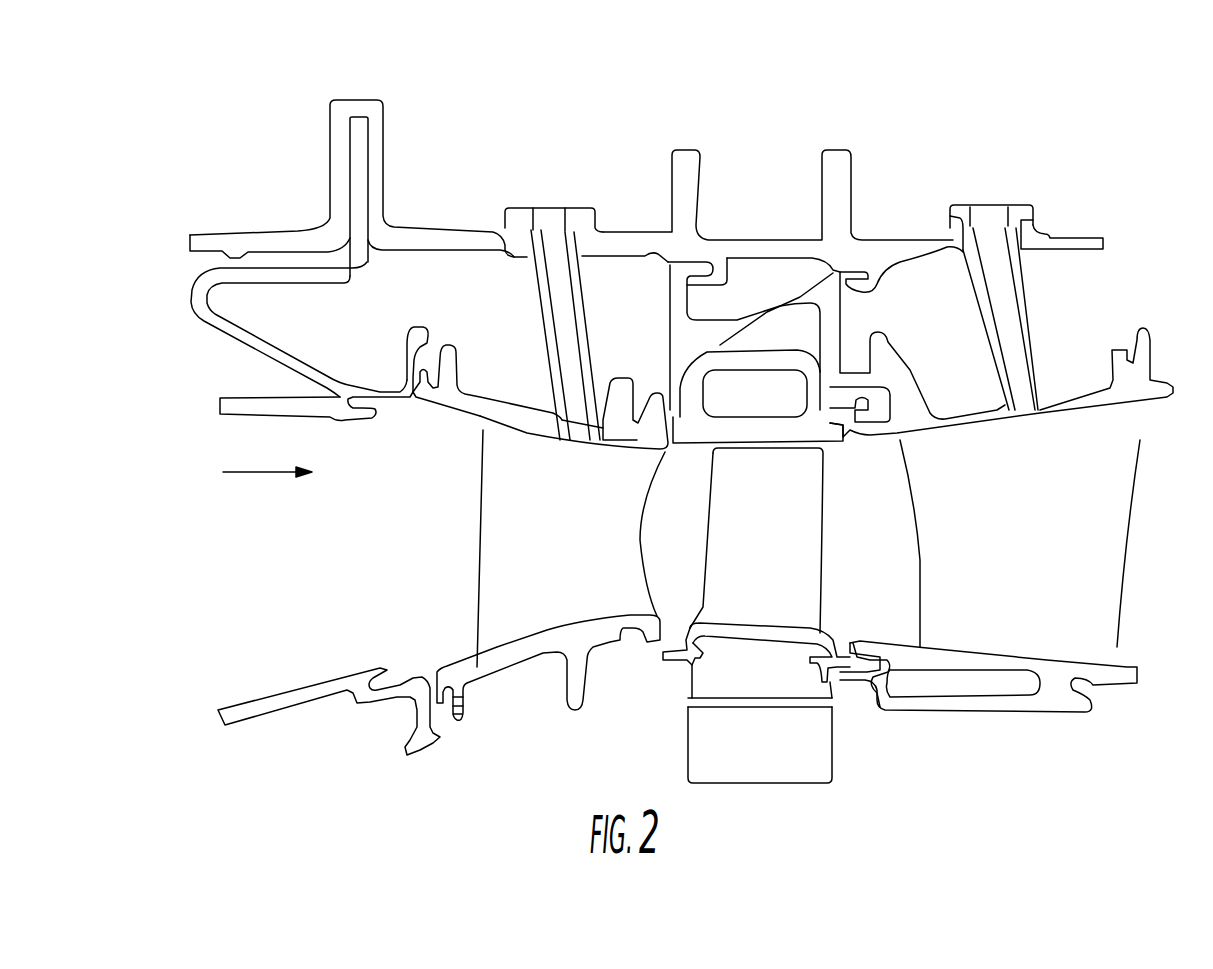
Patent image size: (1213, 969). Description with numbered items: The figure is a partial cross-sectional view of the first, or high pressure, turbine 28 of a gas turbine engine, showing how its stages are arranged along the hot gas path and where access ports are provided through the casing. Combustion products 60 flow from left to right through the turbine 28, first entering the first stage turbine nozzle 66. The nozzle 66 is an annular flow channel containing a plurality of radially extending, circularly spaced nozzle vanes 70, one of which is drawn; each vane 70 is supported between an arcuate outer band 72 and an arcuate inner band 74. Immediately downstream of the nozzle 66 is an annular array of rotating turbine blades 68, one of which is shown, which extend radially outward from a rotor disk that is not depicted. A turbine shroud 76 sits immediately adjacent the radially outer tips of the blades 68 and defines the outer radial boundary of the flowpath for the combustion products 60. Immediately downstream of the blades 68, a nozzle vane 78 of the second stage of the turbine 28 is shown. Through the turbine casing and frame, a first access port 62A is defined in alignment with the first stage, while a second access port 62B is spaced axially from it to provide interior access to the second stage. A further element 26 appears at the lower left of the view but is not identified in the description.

The first turbine 28 is at (617, 70).
The first access port 62A is at (546, 190).
The second access port 62B is at (989, 190).
The arcuate outer band 72 is at (500, 403).
The turbine shroud 76 is at (785, 368).
The combustion products 60 is at (250, 473).
The first stage turbine nozzle 66 is at (468, 556).
The nozzle vane 70 is at (563, 562).
The arcuate inner band 74 is at (503, 660).
The inlet case 26 is at (250, 707).
The turbine blade 68 is at (770, 552).
The second stage nozzle vane 78 is at (1013, 533).